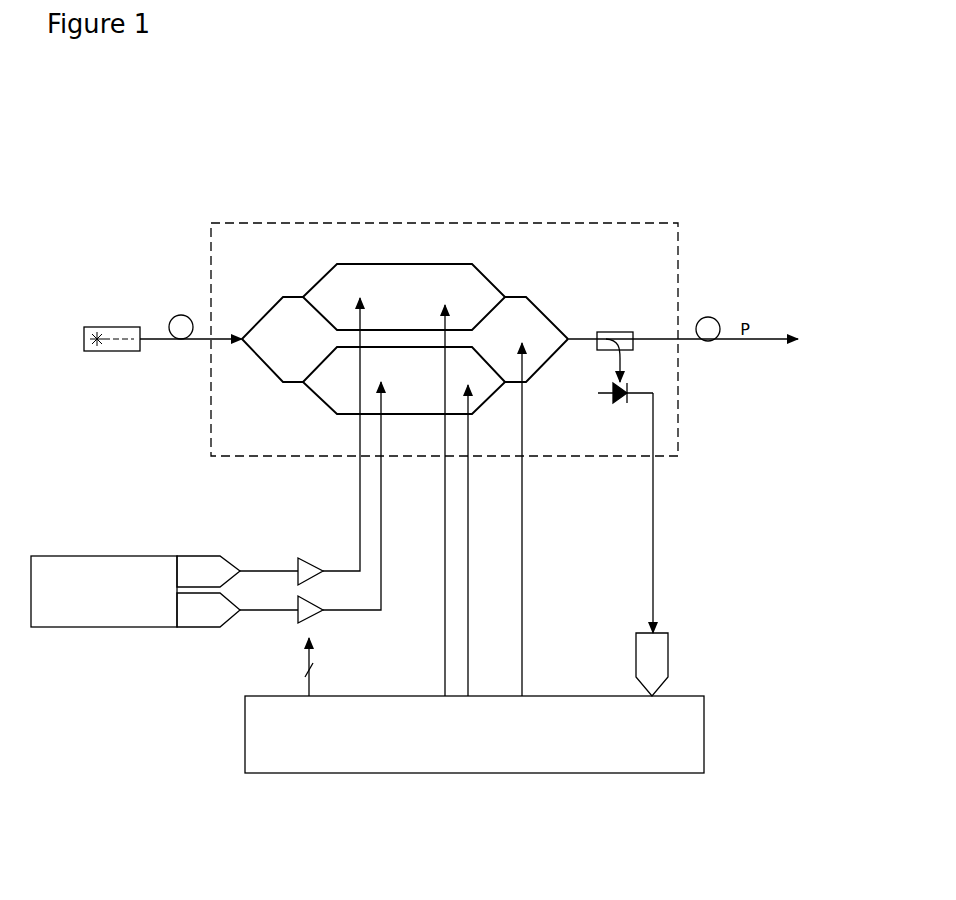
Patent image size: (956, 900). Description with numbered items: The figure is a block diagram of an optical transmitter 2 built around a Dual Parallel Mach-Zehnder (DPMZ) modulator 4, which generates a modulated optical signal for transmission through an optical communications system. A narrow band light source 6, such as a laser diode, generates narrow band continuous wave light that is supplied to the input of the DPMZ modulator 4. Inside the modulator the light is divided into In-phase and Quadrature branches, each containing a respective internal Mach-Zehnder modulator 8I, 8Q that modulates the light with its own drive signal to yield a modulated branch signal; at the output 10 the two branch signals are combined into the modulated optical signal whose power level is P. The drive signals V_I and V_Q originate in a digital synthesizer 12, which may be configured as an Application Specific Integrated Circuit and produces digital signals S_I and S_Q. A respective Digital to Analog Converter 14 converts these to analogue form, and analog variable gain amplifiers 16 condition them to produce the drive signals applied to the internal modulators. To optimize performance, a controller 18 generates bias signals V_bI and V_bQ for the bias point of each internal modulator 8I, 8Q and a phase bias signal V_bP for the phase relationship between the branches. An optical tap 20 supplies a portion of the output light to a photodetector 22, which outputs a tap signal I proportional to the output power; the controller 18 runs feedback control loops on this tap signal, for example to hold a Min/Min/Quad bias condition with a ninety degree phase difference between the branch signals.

The optical transmitter 2 is at (185, 178).
The Dual Parallel Mach-Zehnder (DPMZ) modulator 4 is at (444, 322).
The narrow band light source 6 is at (103, 327).
The internal Mach-Zehnder modulator of the In-phase branch 8I is at (343, 264).
The internal Mach-Zehnder modulator of the Quadrature branch 8Q is at (343, 414).
The output 10 is at (576, 326).
The digital synthesizer 12 is at (102, 556).
The Digital to Analog Converter 14 is at (205, 556).
The analog variable gain amplifier 16 is at (309, 558).
The controller 18 is at (262, 696).
The optical tap 20 is at (630, 332).
The photodetector 22 is at (608, 395).